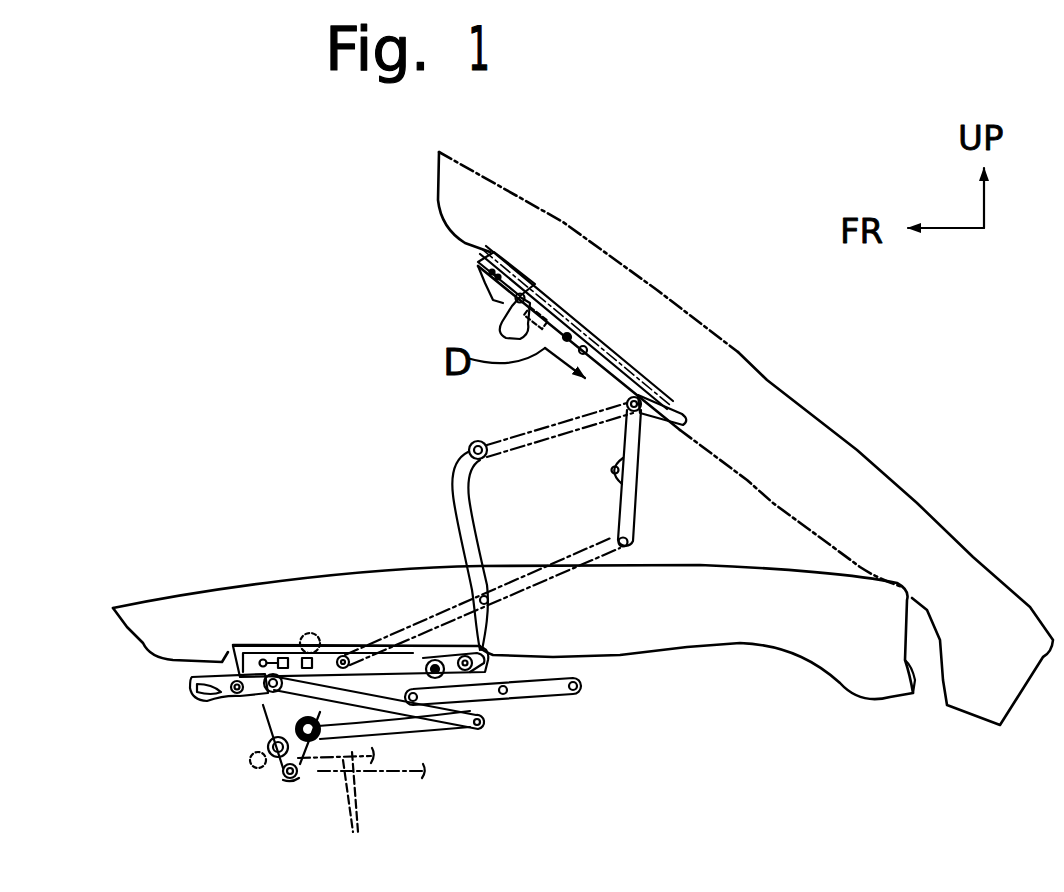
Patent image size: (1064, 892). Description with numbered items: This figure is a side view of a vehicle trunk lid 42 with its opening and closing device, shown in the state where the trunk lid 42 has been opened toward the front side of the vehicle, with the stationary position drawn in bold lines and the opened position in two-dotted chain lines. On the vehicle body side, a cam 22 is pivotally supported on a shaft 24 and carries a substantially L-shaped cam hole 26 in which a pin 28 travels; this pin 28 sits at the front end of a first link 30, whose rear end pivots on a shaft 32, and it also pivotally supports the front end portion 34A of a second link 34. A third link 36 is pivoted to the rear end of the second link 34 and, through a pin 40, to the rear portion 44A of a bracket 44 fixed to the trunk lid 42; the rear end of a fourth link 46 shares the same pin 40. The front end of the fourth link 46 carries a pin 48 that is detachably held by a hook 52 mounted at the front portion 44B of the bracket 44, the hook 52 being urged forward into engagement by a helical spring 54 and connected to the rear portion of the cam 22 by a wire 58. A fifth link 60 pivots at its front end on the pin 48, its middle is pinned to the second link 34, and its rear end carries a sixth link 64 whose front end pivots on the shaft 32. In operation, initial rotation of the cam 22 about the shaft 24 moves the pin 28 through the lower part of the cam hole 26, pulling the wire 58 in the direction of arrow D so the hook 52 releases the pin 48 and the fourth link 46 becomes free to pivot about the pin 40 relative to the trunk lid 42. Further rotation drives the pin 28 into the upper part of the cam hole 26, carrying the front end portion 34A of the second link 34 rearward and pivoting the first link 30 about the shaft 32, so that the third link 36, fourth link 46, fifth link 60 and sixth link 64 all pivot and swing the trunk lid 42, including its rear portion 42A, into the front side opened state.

The cam 22 is at (300, 632).
The shaft 24 is at (279, 767).
The cam hole 26 is at (187, 690).
The pin 28 is at (272, 762).
The first link 30 is at (258, 715).
The shaft 32 is at (367, 740).
The second link 34 is at (540, 587).
The front end portion of the second link 34A is at (223, 702).
The third link 36 is at (617, 442).
The pin 40 is at (636, 401).
The trunk lid 42 is at (738, 350).
The rear portion of the trunk lid 42A is at (910, 665).
The bracket 44 is at (625, 356).
The rear portion of the bracket 44A is at (640, 413).
The front portion of the bracket 44B is at (503, 302).
The fourth link 46 is at (546, 442).
The pin 48 is at (470, 448).
The hook 52 is at (547, 341).
The helical spring 54 is at (545, 322).
The wire 58 is at (687, 427).
The fifth link 60 is at (452, 507).
The sixth link 64 is at (428, 735).